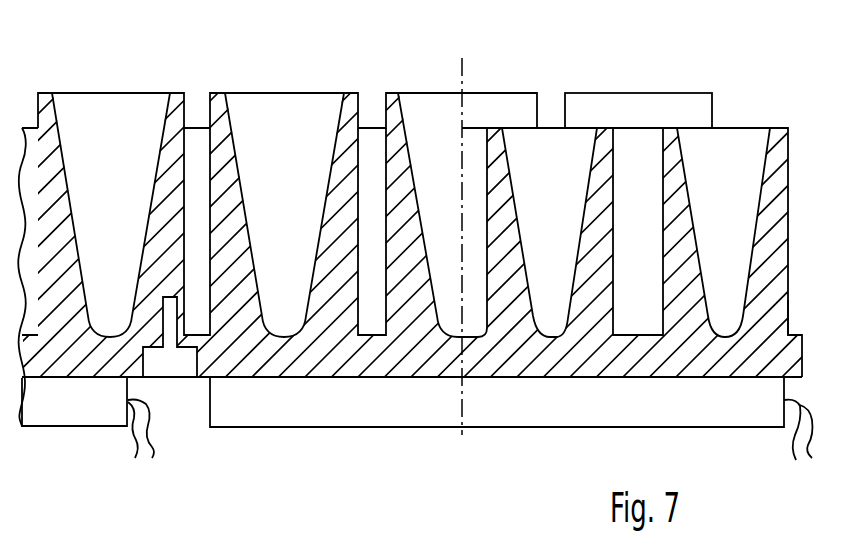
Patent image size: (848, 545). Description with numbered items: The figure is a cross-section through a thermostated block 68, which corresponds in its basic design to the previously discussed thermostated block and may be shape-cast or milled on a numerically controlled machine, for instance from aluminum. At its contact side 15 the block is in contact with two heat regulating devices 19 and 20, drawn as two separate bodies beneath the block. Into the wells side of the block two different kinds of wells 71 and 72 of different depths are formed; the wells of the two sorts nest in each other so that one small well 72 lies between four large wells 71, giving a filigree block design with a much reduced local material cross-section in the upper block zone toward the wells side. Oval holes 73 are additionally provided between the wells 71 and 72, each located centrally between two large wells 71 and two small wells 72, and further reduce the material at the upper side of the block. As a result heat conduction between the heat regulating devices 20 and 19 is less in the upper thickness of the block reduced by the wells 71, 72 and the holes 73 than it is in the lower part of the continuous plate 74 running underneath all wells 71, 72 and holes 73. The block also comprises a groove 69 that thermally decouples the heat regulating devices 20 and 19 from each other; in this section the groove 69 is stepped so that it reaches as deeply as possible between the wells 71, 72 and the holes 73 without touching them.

The contact side 15 is at (515, 382).
The heat regulating device 19 is at (65, 408).
The heat regulating device 20 is at (355, 410).
The thermostated block 68 is at (748, 89).
The groove 69 is at (181, 384).
The well 71 is at (67, 137).
The well 72 is at (585, 148).
The oval hole 73 is at (196, 157).
The continuous plate 74 is at (803, 352).